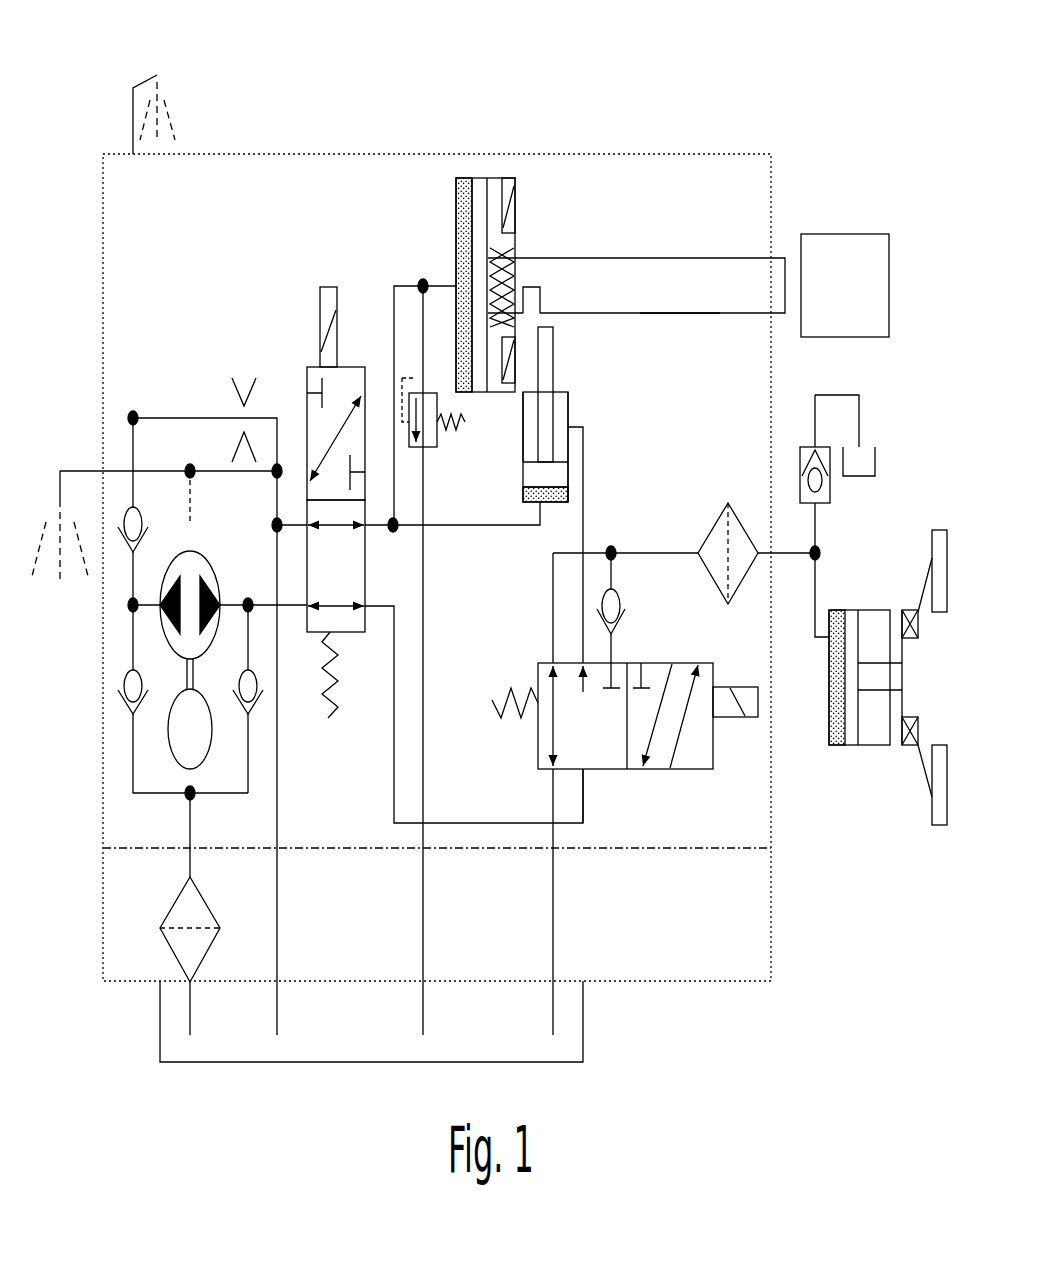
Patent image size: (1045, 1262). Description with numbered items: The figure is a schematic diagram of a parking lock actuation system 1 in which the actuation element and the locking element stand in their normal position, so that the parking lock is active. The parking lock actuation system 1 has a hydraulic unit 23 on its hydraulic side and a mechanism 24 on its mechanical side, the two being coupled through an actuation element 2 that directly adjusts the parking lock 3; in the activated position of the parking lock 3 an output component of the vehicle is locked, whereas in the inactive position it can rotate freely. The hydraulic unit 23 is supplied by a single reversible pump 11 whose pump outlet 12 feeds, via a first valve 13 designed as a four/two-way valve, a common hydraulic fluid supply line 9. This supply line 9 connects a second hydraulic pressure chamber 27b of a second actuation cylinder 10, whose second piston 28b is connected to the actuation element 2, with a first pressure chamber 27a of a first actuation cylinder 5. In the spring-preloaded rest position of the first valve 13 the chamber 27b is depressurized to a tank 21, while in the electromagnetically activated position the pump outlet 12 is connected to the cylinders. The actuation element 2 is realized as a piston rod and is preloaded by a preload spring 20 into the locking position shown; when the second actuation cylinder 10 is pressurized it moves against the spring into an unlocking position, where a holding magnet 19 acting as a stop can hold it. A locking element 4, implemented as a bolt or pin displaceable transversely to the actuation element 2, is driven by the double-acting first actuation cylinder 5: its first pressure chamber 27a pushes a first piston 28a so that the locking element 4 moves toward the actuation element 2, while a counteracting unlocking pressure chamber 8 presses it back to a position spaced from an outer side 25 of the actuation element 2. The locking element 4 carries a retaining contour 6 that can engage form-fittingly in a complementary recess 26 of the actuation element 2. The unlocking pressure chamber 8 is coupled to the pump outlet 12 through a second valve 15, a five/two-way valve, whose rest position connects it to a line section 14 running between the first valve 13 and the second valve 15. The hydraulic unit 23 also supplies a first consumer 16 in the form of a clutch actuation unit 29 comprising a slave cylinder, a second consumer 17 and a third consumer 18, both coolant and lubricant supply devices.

The parking lock actuation system 1 is at (550, 106).
The actuation element 2 is at (641, 275).
The parking lock 3 is at (847, 262).
The locking element 4 is at (543, 370).
The first actuation cylinder 5 is at (571, 441).
The retaining contour 6 is at (546, 331).
The unlocking pressure chamber 8 is at (532, 426).
The hydraulic fluid supply line 9 is at (442, 523).
The second actuation cylinder 10 is at (463, 177).
The pump 11 is at (196, 574).
The pump outlet 12 is at (221, 603).
The first valve 13 is at (312, 360).
The line section 14 is at (441, 822).
The second valve 15 is at (680, 801).
The first consumer 16 is at (891, 527).
The second consumer 17 is at (60, 618).
The third consumer 18 is at (178, 93).
The holding magnet 19 is at (510, 216).
The preload spring 20 is at (507, 279).
The tank 21 is at (583, 1033).
The hydraulic unit 23 is at (421, 187).
The mechanism 24 is at (804, 192).
The outer side 25 is at (651, 316).
The recess 26 is at (532, 300).
The first pressure chamber 27a is at (524, 490).
The second hydraulic pressure chamber 27b is at (458, 238).
The first piston 28a is at (567, 493).
The second piston 28b is at (483, 177).
The clutch actuation unit 29 is at (932, 677).